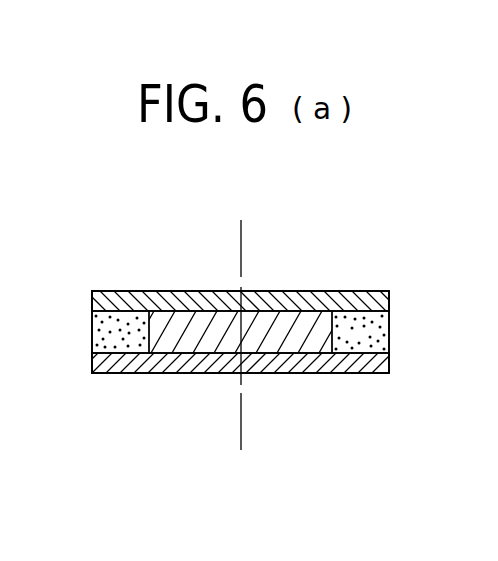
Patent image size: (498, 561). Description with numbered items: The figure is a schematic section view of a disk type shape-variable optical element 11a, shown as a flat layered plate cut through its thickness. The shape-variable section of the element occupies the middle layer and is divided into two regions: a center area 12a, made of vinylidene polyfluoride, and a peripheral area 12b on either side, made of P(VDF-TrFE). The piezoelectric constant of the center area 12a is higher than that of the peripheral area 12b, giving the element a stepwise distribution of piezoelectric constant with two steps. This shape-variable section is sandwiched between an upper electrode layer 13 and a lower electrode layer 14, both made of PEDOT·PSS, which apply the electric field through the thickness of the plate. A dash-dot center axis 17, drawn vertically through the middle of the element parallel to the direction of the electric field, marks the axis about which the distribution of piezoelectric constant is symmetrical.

The shape-variable optical element 11a is at (152, 223).
The center area 12a is at (200, 342).
The peripheral area 12b is at (100, 331).
The electrode layer 13 is at (371, 295).
The electrode layer 14 is at (365, 363).
The center axis 17 is at (241, 238).